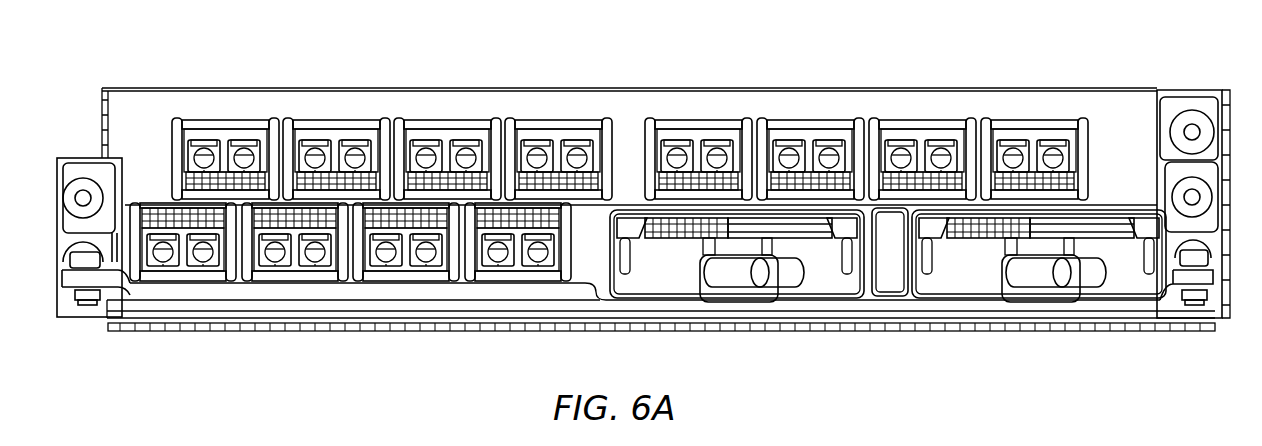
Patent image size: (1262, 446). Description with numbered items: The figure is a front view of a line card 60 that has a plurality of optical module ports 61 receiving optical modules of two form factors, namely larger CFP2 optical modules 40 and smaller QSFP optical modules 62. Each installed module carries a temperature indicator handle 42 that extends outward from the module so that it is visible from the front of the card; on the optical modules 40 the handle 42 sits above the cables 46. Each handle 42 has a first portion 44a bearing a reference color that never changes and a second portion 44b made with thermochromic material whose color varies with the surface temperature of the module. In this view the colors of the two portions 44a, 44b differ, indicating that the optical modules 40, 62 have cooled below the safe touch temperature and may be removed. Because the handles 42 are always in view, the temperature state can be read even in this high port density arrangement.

The line card 60 is at (1157, 92).
The optical module port 61 is at (172, 118).
The optical module 62 is at (538, 132).
The temperature indicator handle 42 is at (1071, 133).
The first portion 44a is at (368, 140).
The second portion 44b is at (313, 140).
The optical module 40 is at (673, 283).
The cable 46 is at (730, 272).